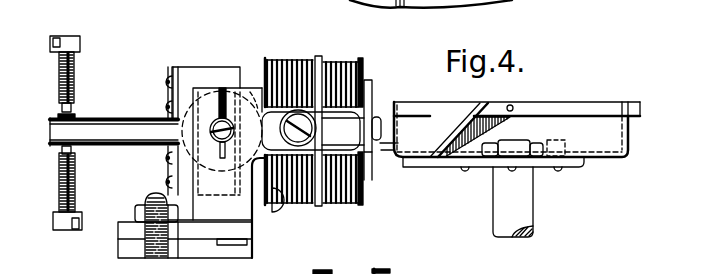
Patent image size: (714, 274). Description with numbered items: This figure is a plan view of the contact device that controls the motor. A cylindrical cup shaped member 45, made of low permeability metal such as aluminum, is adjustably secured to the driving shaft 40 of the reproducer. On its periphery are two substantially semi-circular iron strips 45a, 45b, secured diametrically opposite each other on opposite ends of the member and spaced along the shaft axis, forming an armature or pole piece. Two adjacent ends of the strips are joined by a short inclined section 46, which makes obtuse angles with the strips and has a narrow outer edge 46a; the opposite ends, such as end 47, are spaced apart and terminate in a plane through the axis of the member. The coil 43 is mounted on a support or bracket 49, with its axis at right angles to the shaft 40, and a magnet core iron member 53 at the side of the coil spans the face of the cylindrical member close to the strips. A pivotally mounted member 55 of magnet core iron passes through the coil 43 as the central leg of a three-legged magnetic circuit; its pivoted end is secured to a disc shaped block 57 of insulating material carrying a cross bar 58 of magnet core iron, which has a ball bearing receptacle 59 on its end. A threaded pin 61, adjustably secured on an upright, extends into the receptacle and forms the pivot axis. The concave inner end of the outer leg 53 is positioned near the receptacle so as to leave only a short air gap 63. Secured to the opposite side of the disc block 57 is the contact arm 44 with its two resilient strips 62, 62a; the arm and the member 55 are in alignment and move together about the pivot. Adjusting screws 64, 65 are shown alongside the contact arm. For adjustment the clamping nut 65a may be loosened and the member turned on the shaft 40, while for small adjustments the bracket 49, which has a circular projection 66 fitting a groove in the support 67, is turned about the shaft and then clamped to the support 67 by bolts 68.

The driving shaft 40 is at (536, 220).
The coil 43 is at (335, 65).
The contact arm 44 is at (55, 132).
The cylindrical cup shaped member 45 is at (416, 112).
The semi-circular strip 45a is at (671, 99).
The semi-circular strip 45b is at (378, 148).
The inclined section 46 is at (479, 107).
The outer edge 46a is at (460, 118).
The strip end 47 is at (557, 140).
The support 49 is at (246, 229).
The side member 53 is at (333, 112).
The pivotally mounted member 55 is at (373, 115).
The disc shaped block 57 is at (222, 74).
The cross bar 58 is at (249, 90).
The ball bearing receptacle 59 is at (172, 150).
The threaded pin 61 is at (218, 124).
The resilient strip 62 is at (124, 118).
The resilient strip 62a is at (57, 147).
The air gap 63 is at (262, 90).
The adjusting screw 64 is at (74, 86).
The adjusting screw 65 is at (75, 202).
The clamping nut 65a is at (526, 140).
The circular projection 66 is at (233, 244).
The support 67 is at (128, 247).
The bolt 68 is at (135, 208).